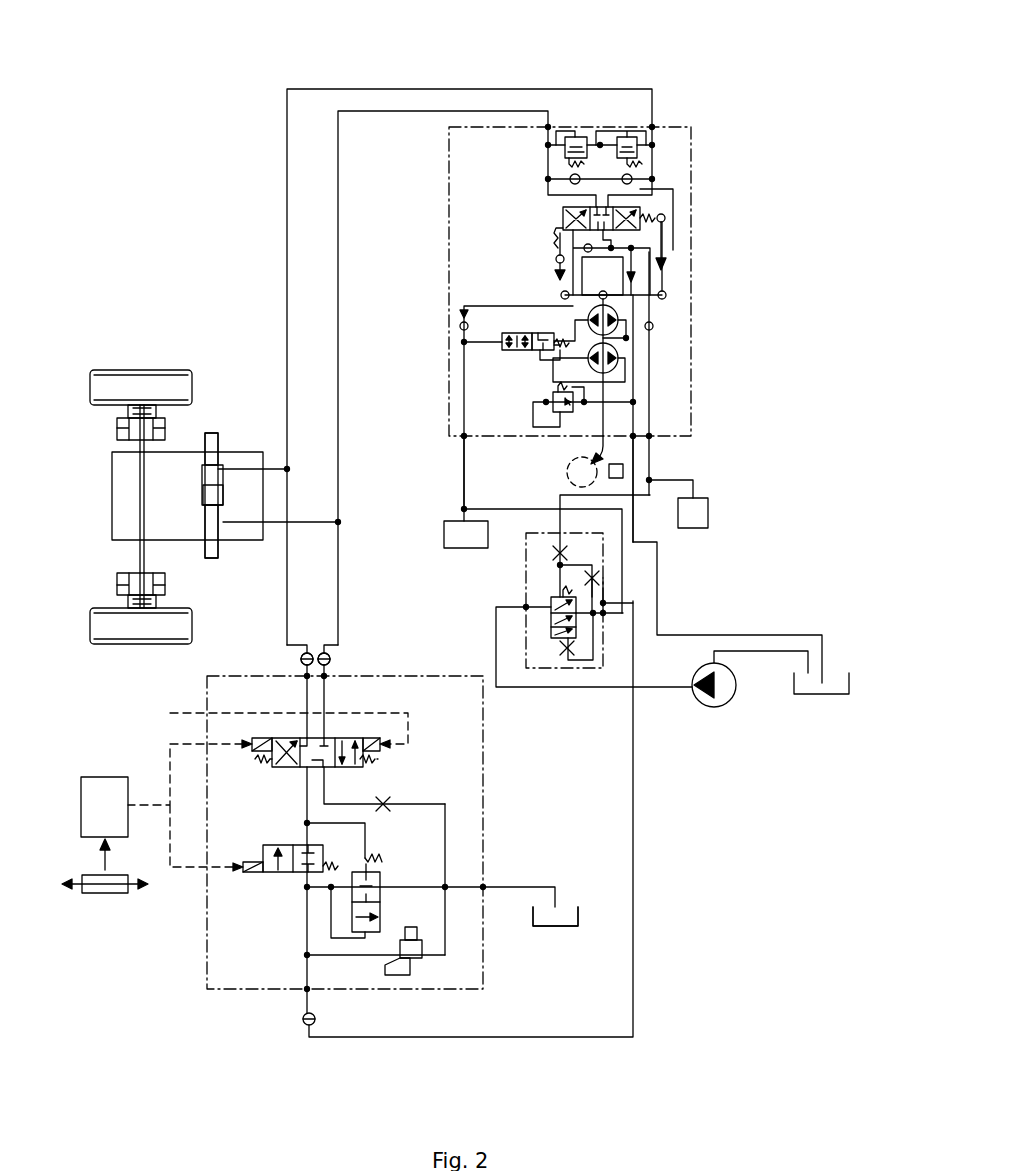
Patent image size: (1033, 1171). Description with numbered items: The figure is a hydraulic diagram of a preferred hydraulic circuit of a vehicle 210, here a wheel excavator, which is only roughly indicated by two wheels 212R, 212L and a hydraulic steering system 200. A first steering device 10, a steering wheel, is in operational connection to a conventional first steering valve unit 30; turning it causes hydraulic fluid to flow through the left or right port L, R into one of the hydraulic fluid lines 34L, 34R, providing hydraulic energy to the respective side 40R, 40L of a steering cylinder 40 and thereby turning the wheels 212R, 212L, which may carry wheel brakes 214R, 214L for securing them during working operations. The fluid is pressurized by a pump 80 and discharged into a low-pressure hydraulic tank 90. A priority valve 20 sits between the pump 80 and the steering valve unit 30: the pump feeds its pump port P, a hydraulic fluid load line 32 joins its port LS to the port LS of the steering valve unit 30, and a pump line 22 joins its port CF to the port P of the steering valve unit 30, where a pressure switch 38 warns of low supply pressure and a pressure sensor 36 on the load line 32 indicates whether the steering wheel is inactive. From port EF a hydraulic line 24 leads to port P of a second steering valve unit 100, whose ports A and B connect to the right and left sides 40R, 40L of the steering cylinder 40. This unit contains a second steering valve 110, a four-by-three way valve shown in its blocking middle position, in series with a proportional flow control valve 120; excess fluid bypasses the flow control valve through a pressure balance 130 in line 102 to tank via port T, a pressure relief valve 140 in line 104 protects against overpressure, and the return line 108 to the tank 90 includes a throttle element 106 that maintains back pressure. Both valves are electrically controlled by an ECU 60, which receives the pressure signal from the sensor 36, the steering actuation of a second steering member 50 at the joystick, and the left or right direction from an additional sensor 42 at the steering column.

The vehicle 210 is at (224, 90).
The hydraulic steering system 200 is at (712, 75).
The hydraulic fluid line 34R is at (287, 216).
The hydraulic fluid line 34L is at (338, 216).
The first steering valve unit 30 is at (691, 258).
The first steering device 10 is at (560, 462).
The additional sensor 42 is at (623, 471).
The pressure sensor 36 is at (708, 512).
The hydraulic fluid load line 32 is at (560, 496).
The pressure switch 38 is at (444, 529).
The priority valve 20 is at (526, 570).
The pump line 22 is at (622, 565).
The hydraulic line 24 is at (636, 858).
The pump 80 is at (712, 707).
The hydraulic tank 90 is at (820, 700).
The second steering valve unit 100 is at (483, 818).
The second steering valve 110 is at (282, 770).
The throttle element 106 is at (384, 799).
The return line 108 is at (446, 805).
The proportional flow control valve 120 is at (283, 873).
The pressure balance 130 is at (378, 884).
The line 102 is at (407, 883).
The line 104 is at (347, 957).
The pressure relief valve 140 is at (422, 961).
The ECU 60 is at (118, 818).
The second steering member 50 is at (105, 894).
The wheel 212R is at (135, 370).
The wheel 212L is at (122, 632).
The wheel brake 214R is at (117, 424).
The wheel brake 214L is at (117, 590).
The steering cylinder 40 is at (234, 480).
The right hand side of steering cylinder 40R is at (217, 432).
The left hand side of steering cylinder 40L is at (214, 560).
The right port R is at (652, 126).
The left port L is at (548, 127).
The pump port P is at (464, 436).
The tank port T is at (484, 886).
The load sensing port LS is at (652, 438).
The excess flow port EF is at (607, 600).
The controlled flow port CF is at (605, 617).
The port A is at (304, 670).
The port B is at (330, 666).